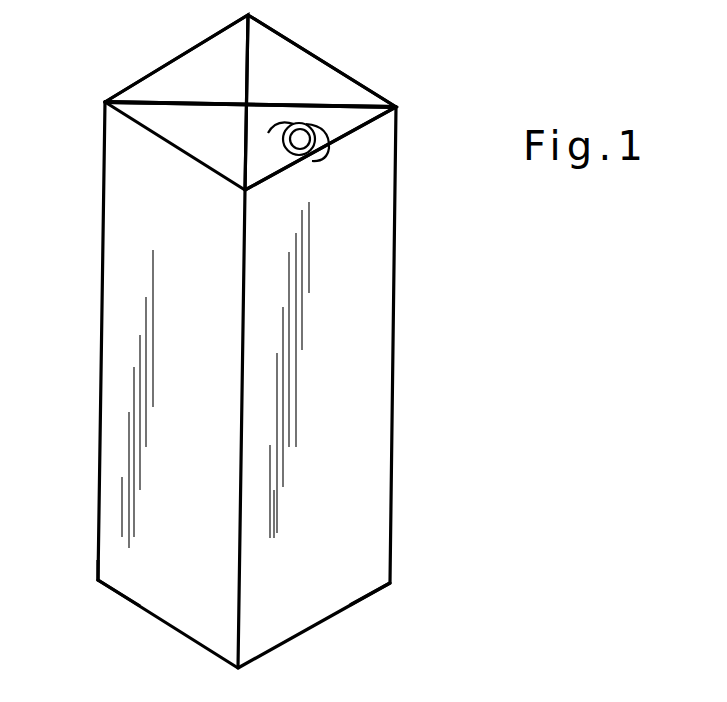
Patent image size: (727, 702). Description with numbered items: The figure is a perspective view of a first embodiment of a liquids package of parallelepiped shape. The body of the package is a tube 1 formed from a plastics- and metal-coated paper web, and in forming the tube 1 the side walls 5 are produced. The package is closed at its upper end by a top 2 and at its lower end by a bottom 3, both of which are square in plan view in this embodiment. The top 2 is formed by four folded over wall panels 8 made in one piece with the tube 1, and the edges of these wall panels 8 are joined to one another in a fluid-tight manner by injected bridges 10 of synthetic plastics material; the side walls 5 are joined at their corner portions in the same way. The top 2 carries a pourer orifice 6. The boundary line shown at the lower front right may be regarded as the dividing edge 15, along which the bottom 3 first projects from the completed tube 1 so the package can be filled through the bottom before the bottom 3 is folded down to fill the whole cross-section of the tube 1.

The tube 1 is at (400, 361).
The top 2 is at (284, 70).
The bottom 3 is at (122, 603).
The walls 5 is at (177, 390).
The pourer orifice 6 is at (360, 194).
The folded over wall panels 8 is at (219, 85).
The injected bridges 10 is at (170, 100).
The dividing edge 15 is at (357, 605).